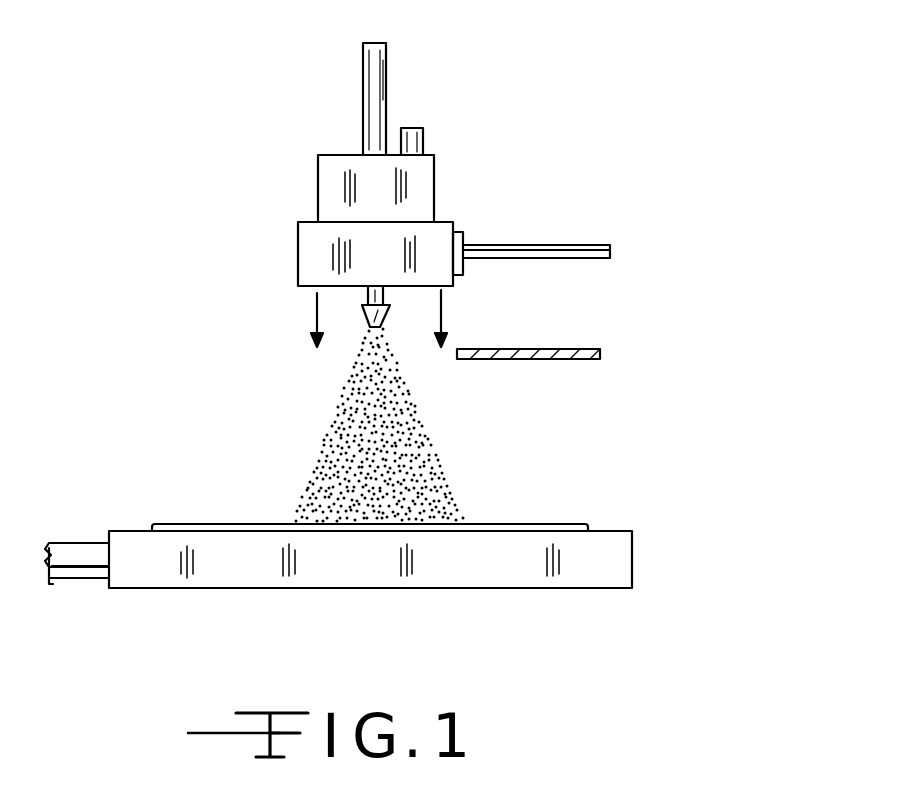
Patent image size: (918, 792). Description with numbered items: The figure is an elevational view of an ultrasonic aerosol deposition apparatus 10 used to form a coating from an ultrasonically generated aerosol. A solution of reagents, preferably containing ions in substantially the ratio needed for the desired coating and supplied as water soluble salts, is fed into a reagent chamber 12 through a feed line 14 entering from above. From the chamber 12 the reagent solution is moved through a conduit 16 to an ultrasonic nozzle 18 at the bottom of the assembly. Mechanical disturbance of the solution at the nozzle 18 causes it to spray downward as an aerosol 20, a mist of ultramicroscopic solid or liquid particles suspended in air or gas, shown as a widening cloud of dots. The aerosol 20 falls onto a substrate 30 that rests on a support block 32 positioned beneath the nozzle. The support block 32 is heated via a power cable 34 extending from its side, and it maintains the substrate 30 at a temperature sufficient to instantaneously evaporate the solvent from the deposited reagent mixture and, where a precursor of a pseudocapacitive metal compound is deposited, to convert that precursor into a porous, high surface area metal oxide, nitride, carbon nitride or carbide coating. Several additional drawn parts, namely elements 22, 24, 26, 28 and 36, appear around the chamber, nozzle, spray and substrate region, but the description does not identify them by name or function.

The ultrasonic aerosol deposition apparatus 10 is at (700, 150).
The reagent chamber 12 is at (420, 192).
The feed line 14 is at (390, 72).
The conduit 16 is at (362, 297).
The ultrasonic nozzle 18 is at (388, 312).
The aerosol 20 is at (455, 428).
The gas inlet 22 is at (423, 137).
The carrier gas flow 24 is at (313, 308).
The gun housing 26 is at (313, 253).
The supply conduit 28 is at (538, 243).
The substrate 30 is at (542, 523).
The support block 32 is at (618, 552).
The power cable 34 is at (75, 543).
The shield plate 36 is at (583, 347).